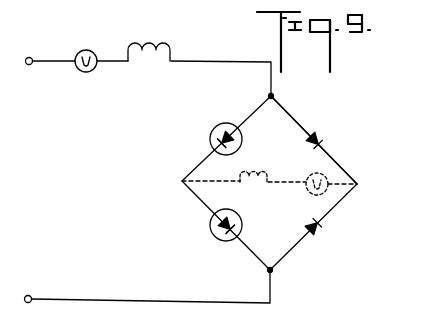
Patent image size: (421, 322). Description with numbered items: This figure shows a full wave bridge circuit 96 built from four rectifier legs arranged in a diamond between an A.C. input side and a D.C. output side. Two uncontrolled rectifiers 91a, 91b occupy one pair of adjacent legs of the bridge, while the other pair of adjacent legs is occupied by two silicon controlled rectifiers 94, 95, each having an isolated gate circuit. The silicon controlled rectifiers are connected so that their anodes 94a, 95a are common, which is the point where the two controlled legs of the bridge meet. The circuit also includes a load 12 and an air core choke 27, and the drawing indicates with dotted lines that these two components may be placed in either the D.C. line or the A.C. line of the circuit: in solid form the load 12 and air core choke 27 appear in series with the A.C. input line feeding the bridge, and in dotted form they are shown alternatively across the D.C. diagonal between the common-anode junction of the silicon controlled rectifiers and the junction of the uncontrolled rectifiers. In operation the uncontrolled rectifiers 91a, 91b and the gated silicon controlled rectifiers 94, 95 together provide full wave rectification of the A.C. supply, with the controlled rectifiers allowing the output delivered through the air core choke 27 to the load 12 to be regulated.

The load 12 is at (94, 50).
The air core choke 27 is at (161, 63).
The silicon controlled rectifier 94 is at (228, 123).
The anode of silicon controlled rectifier 94a is at (210, 143).
The silicon controlled rectifier 95 is at (230, 243).
The anode of silicon controlled rectifier 95a is at (212, 221).
The full wave bridge circuit 96 is at (301, 121).
The uncontrolled rectifier 91a is at (320, 136).
The uncontrolled rectifier 91b is at (316, 240).